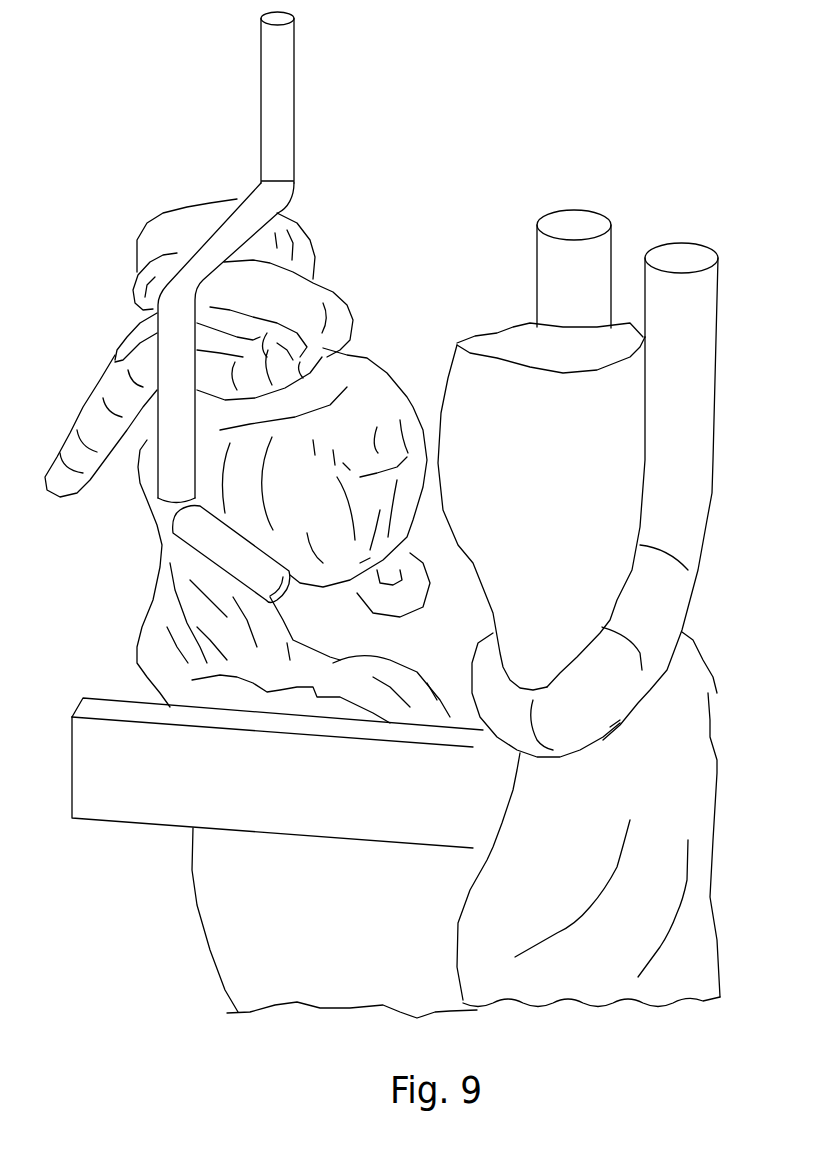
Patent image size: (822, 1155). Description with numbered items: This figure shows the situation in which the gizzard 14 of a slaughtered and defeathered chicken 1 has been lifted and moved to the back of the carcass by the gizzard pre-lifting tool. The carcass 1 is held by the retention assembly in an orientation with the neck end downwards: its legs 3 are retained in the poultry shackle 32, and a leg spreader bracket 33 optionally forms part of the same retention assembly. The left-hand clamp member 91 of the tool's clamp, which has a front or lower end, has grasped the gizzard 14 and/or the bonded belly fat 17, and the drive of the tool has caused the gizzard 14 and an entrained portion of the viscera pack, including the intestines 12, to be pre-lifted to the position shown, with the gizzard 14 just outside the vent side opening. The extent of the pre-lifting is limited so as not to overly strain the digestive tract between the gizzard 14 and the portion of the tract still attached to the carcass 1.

The left-hand clamp member 91 is at (307, 143).
The intestines 12 is at (297, 312).
The gizzard 14 is at (312, 504).
The belly fat 17 is at (167, 562).
The leg 3 is at (560, 477).
The poultry shackle 32 is at (702, 427).
The leg spreader bracket 33 is at (417, 812).
The chicken 1 is at (370, 939).